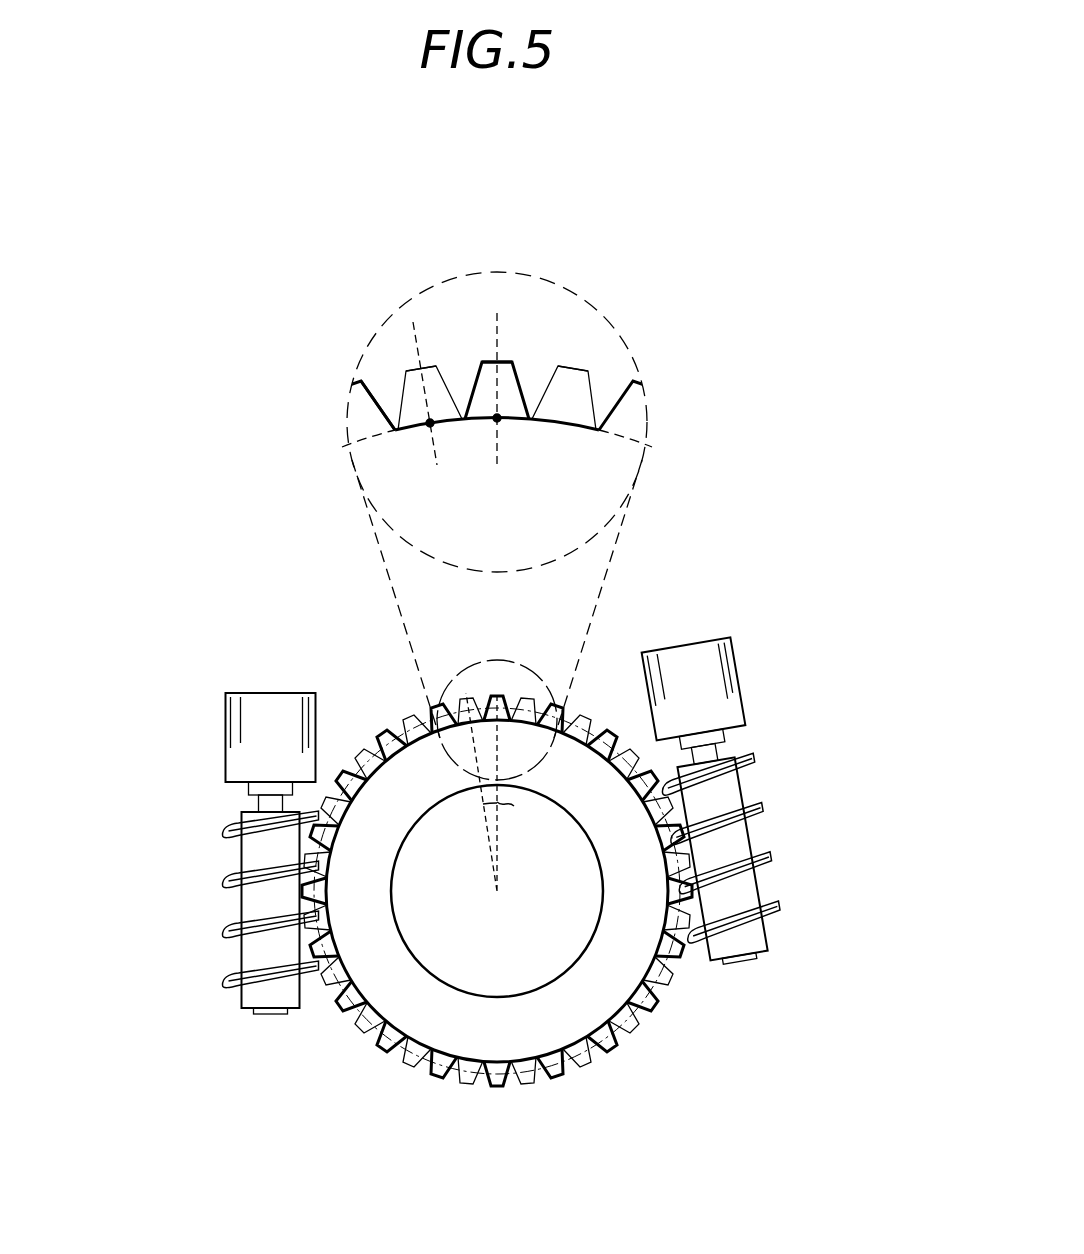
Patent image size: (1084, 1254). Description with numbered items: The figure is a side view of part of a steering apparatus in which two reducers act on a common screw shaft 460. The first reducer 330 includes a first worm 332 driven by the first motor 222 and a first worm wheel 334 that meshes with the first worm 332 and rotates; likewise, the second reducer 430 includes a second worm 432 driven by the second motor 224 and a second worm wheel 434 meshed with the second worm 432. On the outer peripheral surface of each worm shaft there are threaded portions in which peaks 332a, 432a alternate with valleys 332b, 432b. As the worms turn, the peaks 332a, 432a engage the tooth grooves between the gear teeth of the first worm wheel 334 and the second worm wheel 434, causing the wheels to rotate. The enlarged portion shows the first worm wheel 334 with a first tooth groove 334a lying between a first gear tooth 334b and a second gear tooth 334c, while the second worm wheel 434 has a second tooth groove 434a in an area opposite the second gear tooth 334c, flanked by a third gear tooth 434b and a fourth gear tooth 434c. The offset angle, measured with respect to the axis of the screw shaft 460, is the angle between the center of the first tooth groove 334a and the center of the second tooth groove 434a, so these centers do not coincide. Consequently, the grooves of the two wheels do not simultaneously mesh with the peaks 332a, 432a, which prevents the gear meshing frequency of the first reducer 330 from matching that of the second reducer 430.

The first motor 222 is at (253, 734).
The second motor 224 is at (705, 676).
The first reducer 330 is at (233, 967).
The first worm 332 is at (223, 939).
The peak of threaded portion 332a is at (236, 876).
The valley of threaded portion 332b is at (253, 902).
The first worm wheel 334 is at (505, 377).
The first tooth groove 334a is at (430, 423).
The first gear tooth 334b is at (357, 385).
The second gear tooth 334c is at (492, 362).
The second reducer 430 is at (765, 924).
The second worm 432 is at (765, 898).
The peak of threaded portion 432a is at (768, 863).
The valley of threaded portion 432b is at (747, 887).
The second worm wheel 434 is at (580, 393).
The second tooth groove 434a is at (500, 424).
The third gear tooth 434b is at (430, 365).
The fourth gear tooth 434c is at (577, 360).
The screw shaft 460 is at (495, 977).